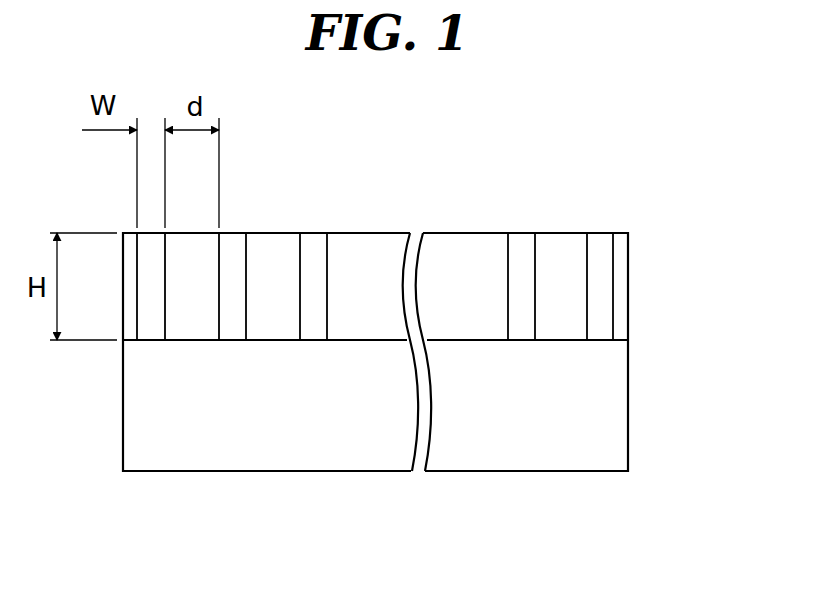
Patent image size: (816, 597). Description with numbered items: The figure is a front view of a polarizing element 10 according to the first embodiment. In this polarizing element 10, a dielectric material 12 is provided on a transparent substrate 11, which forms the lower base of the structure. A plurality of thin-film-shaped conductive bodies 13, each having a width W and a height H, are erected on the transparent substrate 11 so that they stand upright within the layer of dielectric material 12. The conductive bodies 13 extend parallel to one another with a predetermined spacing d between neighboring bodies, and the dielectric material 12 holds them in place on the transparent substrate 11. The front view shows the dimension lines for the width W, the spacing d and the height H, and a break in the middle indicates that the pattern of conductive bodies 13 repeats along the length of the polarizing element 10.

The polarizing element 10 is at (415, 313).
The transparent substrate 11 is at (465, 458).
The dielectric material 12 is at (568, 285).
The thin-film-shaped conductive bodies 13 is at (312, 247).